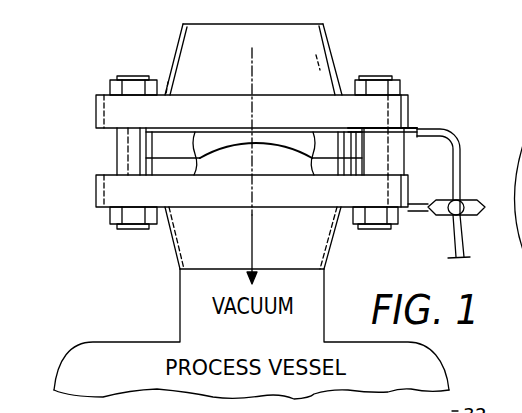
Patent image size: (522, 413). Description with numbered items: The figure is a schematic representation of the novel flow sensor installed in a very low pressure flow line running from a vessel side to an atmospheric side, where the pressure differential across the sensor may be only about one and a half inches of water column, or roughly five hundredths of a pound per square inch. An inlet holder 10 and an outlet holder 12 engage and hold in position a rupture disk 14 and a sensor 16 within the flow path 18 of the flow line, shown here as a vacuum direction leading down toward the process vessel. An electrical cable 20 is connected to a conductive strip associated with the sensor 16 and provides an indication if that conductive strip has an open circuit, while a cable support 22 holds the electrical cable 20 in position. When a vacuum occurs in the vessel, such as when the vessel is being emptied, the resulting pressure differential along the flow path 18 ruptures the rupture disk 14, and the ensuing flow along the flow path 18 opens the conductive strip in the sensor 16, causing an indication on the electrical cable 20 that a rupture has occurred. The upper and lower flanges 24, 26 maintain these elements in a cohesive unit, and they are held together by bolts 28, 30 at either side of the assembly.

The inlet holder 10 is at (164, 212).
The outlet holder 12 is at (172, 143).
The rupture disk 14 is at (272, 147).
The sensor 16 is at (409, 128).
The flow path 18 is at (248, 239).
The electrical cable 20 is at (434, 126).
The cable support 22 is at (444, 220).
The flange 24 is at (113, 109).
The flange 26 is at (113, 192).
The bolt 28 is at (125, 150).
The bolt 30 is at (376, 156).